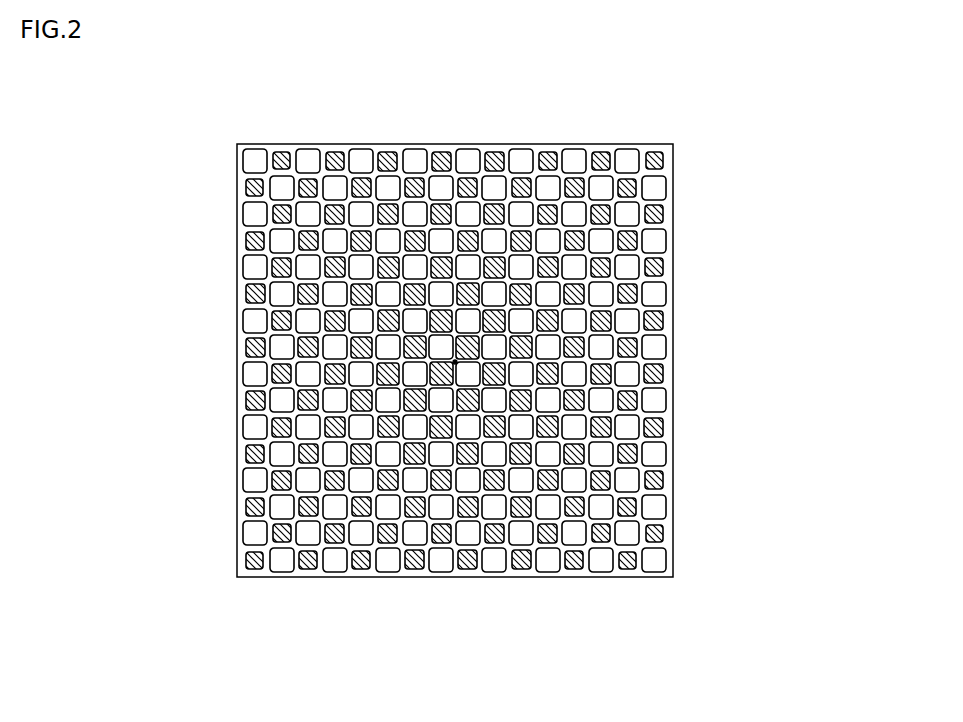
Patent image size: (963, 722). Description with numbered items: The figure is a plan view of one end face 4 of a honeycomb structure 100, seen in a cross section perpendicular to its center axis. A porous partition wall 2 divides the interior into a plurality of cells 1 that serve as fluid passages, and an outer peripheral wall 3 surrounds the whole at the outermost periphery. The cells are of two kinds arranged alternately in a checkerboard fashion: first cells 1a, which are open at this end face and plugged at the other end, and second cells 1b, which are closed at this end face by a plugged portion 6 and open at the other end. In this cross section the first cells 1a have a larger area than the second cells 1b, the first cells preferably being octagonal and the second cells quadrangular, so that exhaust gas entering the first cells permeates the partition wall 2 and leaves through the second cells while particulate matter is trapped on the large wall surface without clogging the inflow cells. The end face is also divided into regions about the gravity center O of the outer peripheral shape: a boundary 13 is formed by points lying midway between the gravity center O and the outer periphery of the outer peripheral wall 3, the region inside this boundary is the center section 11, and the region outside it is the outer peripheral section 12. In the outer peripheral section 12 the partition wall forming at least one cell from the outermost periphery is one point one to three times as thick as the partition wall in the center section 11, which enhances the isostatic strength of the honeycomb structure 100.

The honeycomb structure 100 is at (832, 83).
The cell 1 is at (657, 193).
The first cell 1a is at (657, 243).
The second cell 1b is at (662, 323).
The partition wall 2 is at (645, 399).
The outer peripheral wall 3 is at (673, 472).
The one end face 4 is at (665, 543).
The plugged portion 6 is at (628, 570).
The center section 11 is at (433, 433).
The outer peripheral section 12 is at (573, 158).
The boundary formed by points at the middle of the distance between a gravity center 13 is at (402, 253).
The gravity center O is at (455, 362).